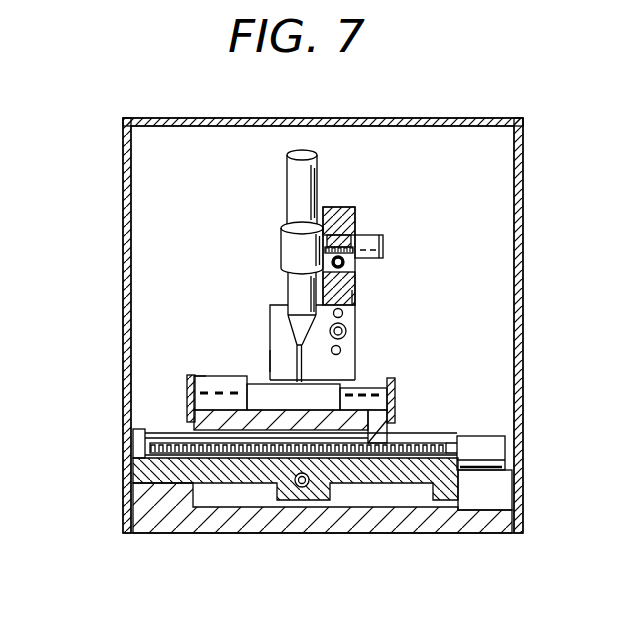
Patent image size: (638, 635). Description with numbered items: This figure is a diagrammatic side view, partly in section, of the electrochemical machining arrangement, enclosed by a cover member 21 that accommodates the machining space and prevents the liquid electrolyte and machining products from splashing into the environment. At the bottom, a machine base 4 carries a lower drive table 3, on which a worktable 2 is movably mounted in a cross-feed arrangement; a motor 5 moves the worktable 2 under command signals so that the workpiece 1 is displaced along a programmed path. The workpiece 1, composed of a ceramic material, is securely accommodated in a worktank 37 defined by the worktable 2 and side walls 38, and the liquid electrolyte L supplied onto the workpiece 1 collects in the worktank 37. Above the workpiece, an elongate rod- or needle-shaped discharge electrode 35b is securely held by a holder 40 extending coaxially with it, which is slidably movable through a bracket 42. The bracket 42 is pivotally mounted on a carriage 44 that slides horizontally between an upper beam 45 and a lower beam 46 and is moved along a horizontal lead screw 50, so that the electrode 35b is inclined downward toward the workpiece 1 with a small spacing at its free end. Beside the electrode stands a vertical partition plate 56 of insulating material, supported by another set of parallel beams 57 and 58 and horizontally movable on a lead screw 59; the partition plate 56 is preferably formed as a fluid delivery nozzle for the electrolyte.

The cover member 21 is at (123, 372).
The holder 40 is at (289, 167).
The bracket 42 is at (281, 245).
The upper beam 45 is at (339, 207).
The carriage 44 is at (366, 235).
The lead screw 50 is at (351, 267).
The lower beam 46 is at (355, 298).
The partition plate 56 is at (275, 305).
The parallel beam 57 is at (343, 316).
The lead screw 59 is at (346, 335).
The parallel beam 58 is at (341, 352).
The discharge electrode 35b is at (272, 360).
The worktank 37 is at (218, 377).
The liquid electrolyte L is at (206, 376).
The workpiece 1 is at (258, 385).
The side walls 38 is at (187, 392).
The worktable 2 is at (208, 419).
The motor 5 is at (481, 440).
The lower drive table 3 is at (343, 488).
The machine base 4 is at (386, 533).